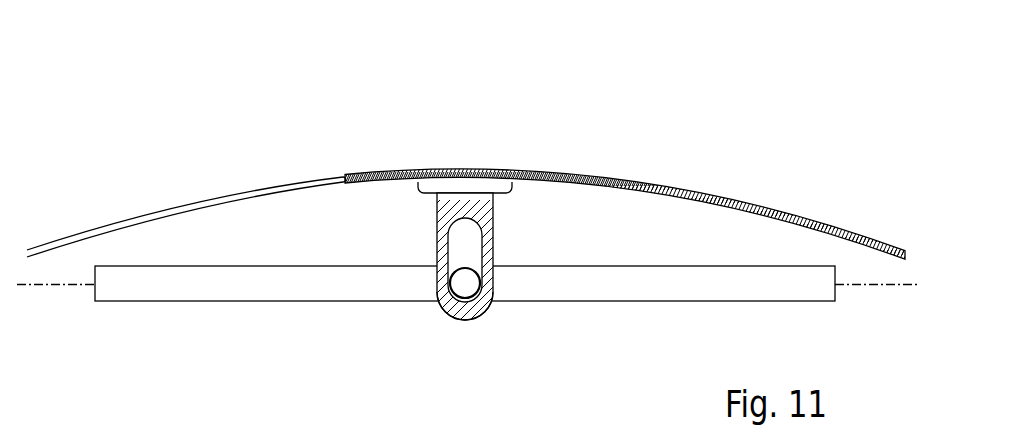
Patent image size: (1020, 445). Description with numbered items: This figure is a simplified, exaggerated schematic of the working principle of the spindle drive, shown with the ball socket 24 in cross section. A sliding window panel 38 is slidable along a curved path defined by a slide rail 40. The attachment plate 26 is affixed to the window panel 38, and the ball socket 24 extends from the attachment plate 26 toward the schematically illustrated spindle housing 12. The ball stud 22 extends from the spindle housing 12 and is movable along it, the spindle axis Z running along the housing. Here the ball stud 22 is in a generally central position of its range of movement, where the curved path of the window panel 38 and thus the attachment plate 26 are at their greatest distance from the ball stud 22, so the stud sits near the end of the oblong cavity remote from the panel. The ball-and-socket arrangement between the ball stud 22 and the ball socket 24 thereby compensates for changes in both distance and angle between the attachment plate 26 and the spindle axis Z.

The spindle housing 12 is at (712, 293).
The ball stud 22 is at (450, 315).
The ball socket 24 is at (495, 204).
The attachment plate 26 is at (458, 181).
The window panel 38 is at (765, 207).
The slide rail 40 is at (233, 197).
The spindle axis Z is at (48, 285).